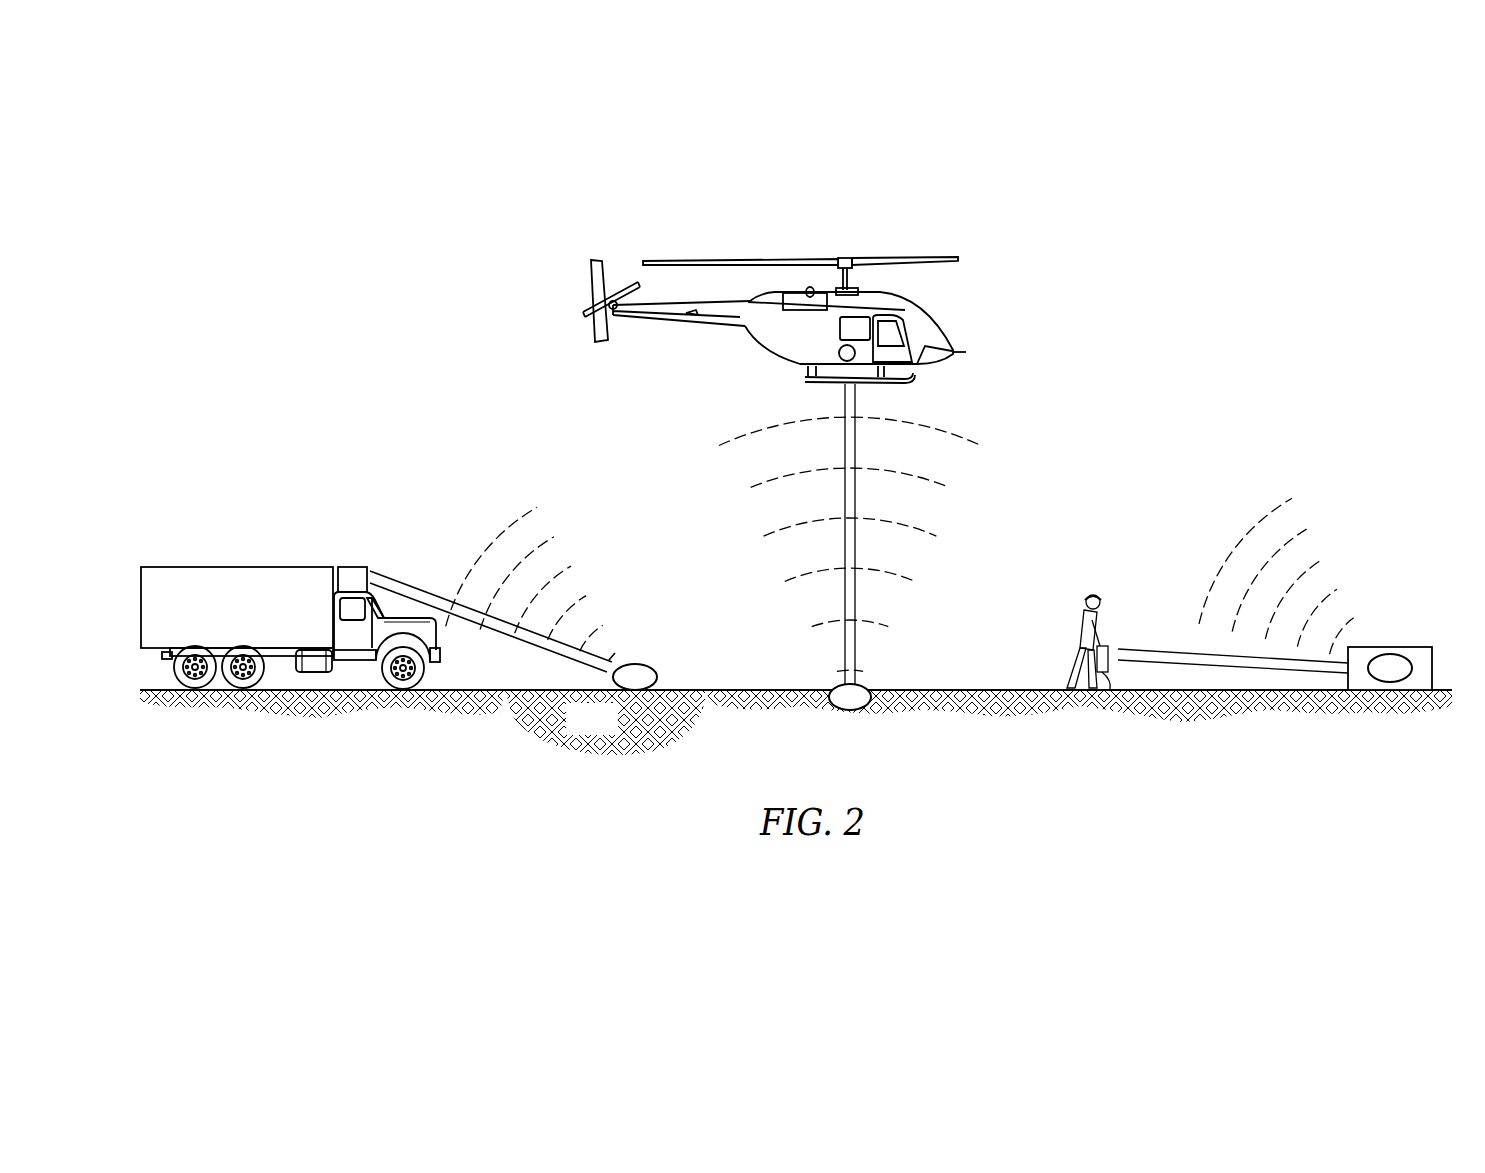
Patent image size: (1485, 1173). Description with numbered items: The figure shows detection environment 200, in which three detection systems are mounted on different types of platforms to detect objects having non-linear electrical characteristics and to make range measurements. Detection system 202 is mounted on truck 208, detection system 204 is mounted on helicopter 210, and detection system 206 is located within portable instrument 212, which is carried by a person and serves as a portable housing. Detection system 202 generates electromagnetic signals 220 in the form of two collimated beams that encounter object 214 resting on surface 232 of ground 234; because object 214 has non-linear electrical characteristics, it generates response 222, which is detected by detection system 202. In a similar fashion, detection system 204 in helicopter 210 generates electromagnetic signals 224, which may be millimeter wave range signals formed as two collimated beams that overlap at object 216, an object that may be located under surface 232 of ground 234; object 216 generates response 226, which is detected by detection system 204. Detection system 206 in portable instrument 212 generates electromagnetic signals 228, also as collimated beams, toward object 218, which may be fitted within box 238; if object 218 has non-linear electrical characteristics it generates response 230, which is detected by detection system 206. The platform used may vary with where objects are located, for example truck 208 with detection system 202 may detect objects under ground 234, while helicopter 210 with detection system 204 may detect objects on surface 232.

The detection environment 200 is at (1152, 371).
The detection system 202 is at (352, 566).
The detection system 204 is at (840, 348).
The detection system 206 is at (1108, 648).
The truck 208 is at (240, 566).
The helicopter 210 is at (931, 336).
The portable instrument 212 is at (1110, 692).
The object 214 is at (638, 664).
The object 216 is at (863, 706).
The object 218 is at (1410, 647).
The electromagnetic signals 220 is at (412, 587).
The response 222 is at (512, 528).
The electromagnetic signals 224 is at (858, 648).
The response 226 is at (752, 488).
The electromagnetic signals 228 is at (1262, 669).
The response 230 is at (1231, 556).
The surface 232 is at (497, 691).
The ground 234 is at (612, 732).
The box 238 is at (1390, 647).